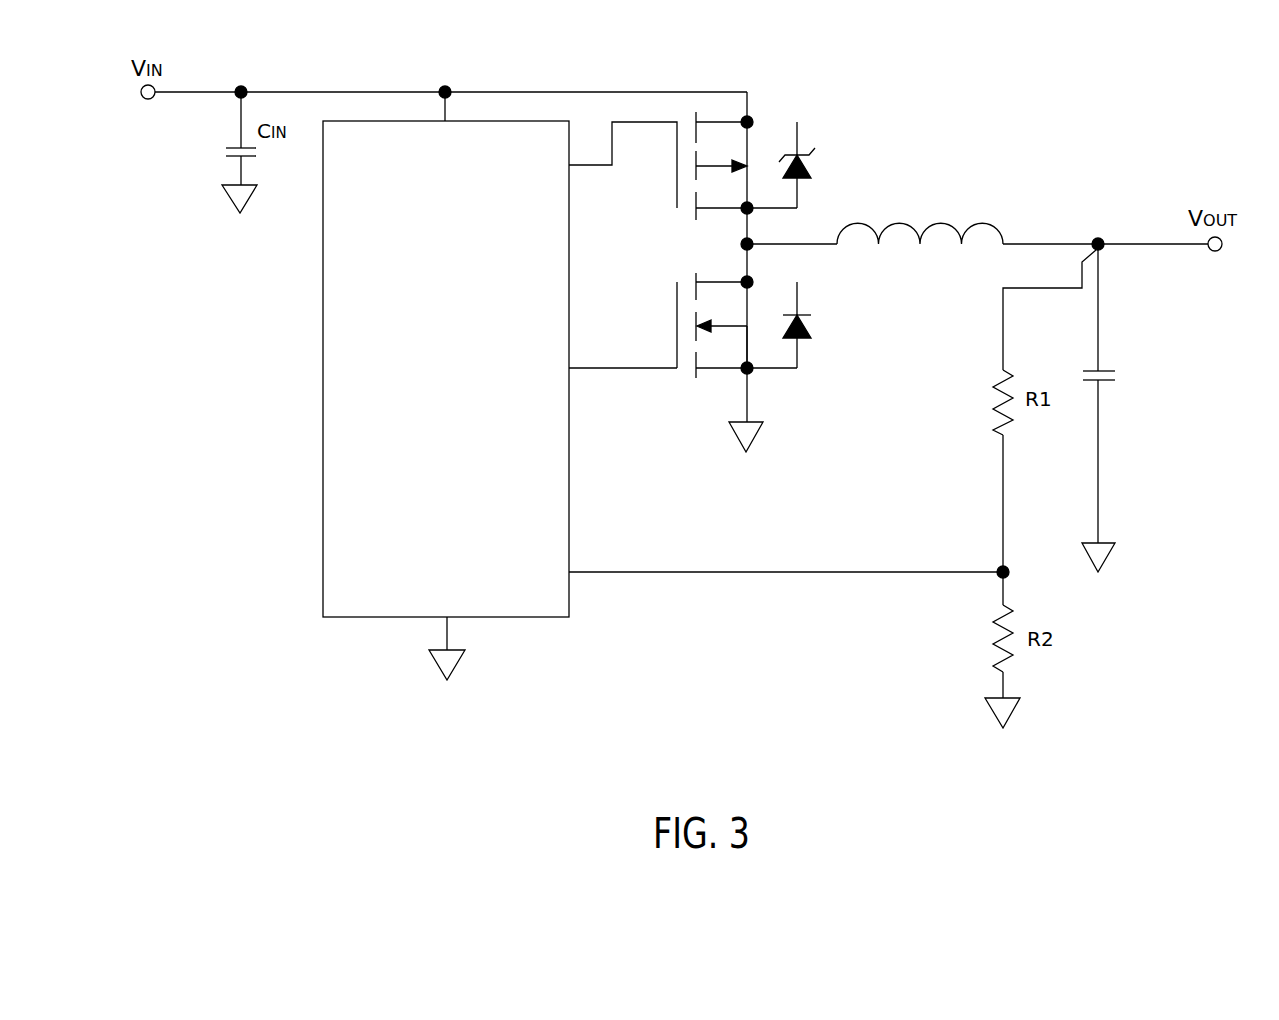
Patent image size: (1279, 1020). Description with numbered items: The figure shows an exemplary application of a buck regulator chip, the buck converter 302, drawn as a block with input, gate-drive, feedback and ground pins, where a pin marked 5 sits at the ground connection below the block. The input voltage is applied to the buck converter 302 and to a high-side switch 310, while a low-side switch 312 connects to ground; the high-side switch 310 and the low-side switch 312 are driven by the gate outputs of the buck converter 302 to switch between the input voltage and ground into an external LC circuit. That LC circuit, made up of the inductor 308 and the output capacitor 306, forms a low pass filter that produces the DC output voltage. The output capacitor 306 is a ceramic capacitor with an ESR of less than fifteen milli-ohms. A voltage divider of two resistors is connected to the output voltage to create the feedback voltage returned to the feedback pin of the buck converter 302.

The buck converter 302 is at (325, 397).
The output capacitor 306 is at (1105, 382).
The inductor 308 is at (997, 226).
The high-side switch 310 is at (768, 212).
The low-side switch 312 is at (780, 372).
The ground pin 5 is at (444, 648).